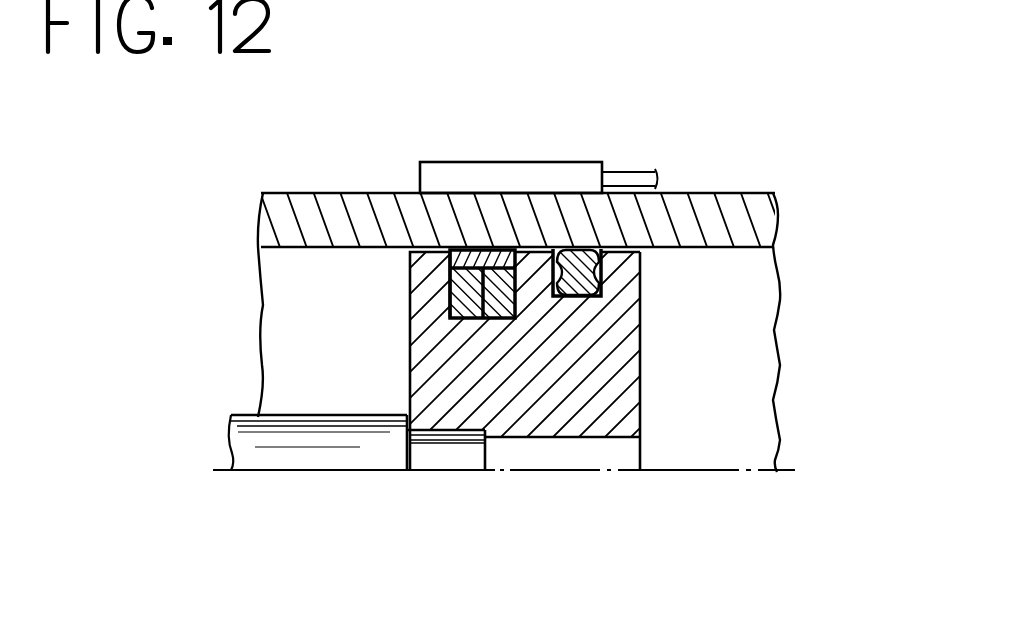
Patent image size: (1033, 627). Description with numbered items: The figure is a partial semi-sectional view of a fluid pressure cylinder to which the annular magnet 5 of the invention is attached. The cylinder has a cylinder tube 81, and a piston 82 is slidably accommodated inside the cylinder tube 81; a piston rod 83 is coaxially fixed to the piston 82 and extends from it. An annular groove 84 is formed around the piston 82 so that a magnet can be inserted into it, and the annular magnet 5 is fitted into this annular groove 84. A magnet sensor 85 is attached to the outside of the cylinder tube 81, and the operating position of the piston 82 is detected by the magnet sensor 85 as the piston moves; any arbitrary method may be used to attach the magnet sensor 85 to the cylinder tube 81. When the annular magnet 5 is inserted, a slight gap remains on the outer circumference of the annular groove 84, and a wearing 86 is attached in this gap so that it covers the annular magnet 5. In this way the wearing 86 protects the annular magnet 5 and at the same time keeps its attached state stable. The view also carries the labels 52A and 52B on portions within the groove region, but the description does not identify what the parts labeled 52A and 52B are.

The cylinder tube 81 is at (716, 200).
The piston 82 is at (628, 370).
The piston rod 83 is at (310, 430).
The annular groove 84 is at (450, 282).
The magnet sensor 85 is at (545, 170).
The wearing 86 is at (483, 258).
The annular magnet 5 is at (483, 331).
The first seal element 52A is at (458, 300).
The second seal element 52B is at (502, 307).